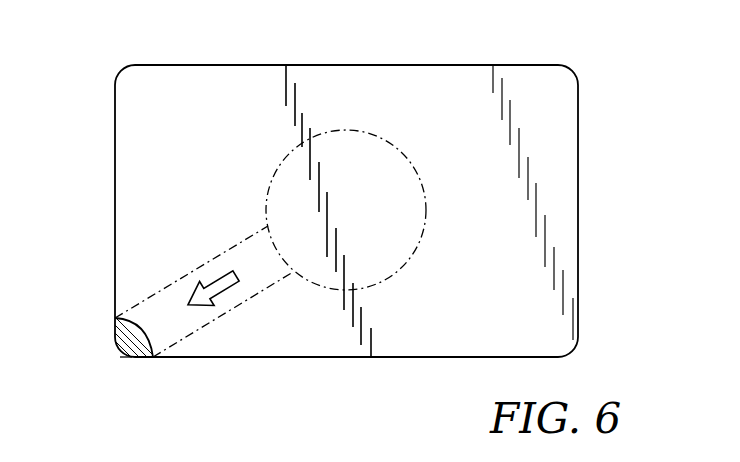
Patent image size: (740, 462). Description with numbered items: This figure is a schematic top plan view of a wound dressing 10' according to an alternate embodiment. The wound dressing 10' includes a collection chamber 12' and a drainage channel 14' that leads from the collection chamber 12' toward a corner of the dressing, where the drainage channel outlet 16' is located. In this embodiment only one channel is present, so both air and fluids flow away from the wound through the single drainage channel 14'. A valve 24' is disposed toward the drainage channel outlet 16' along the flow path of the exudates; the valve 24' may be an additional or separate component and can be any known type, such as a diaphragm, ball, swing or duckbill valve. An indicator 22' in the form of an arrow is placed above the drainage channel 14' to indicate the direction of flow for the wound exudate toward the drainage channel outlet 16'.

The wound dressing 10' is at (410, 193).
The collection chamber 12' is at (360, 193).
The drainage channel 14' is at (222, 312).
The drainage channel outlet 16' is at (86, 348).
The indicator 22' is at (146, 267).
The valve 24' is at (149, 383).